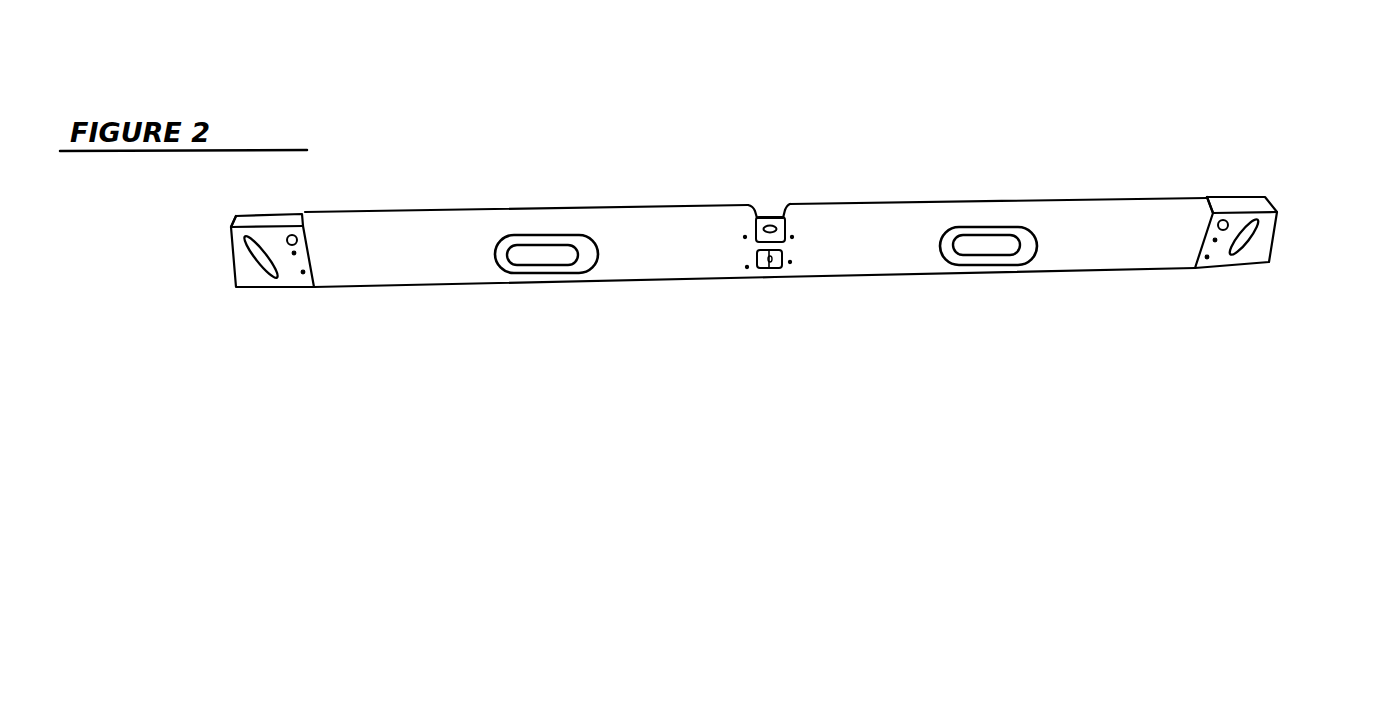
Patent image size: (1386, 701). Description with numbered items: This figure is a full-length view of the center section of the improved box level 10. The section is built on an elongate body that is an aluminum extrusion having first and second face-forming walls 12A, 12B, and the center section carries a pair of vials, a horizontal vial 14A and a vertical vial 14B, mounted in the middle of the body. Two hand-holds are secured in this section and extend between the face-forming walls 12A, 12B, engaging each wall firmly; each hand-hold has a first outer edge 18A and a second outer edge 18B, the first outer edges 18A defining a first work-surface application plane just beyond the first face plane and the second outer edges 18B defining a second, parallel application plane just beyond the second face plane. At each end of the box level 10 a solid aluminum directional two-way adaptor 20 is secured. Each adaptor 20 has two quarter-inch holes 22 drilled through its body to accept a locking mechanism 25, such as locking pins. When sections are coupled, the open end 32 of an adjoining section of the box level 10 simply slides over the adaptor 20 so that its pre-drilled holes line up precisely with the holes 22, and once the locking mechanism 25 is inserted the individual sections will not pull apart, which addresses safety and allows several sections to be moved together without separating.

The box level 10 is at (799, 328).
The first face-forming wall 12A is at (670, 260).
The second face-forming wall 12B is at (662, 205).
The horizontal vial 14A is at (762, 276).
The vertical vial 14B is at (763, 215).
The first outer edge of hand-hold 18A is at (533, 278).
The second outer edge of hand-hold 18B is at (498, 273).
The solid aluminum directional 2-way adaptor 20 is at (272, 287).
The quarter-inch holes 22 is at (310, 287).
The locking mechanism 25 is at (295, 259).
The open end 32 is at (310, 215).